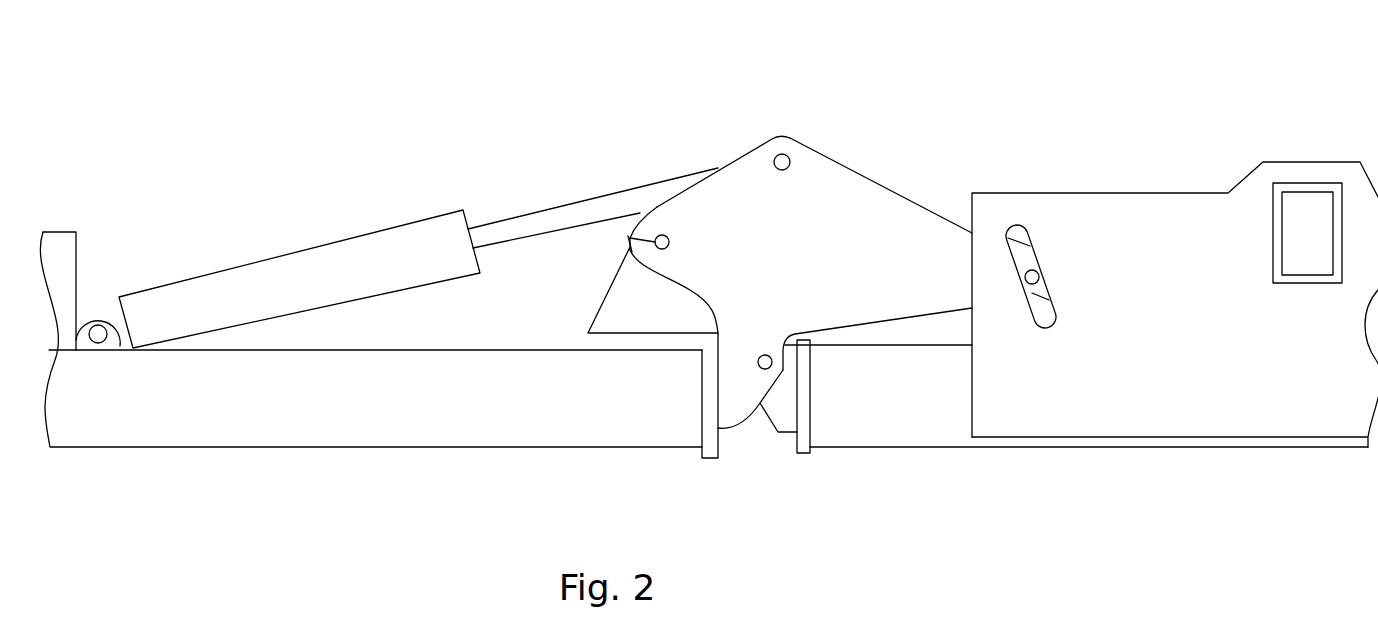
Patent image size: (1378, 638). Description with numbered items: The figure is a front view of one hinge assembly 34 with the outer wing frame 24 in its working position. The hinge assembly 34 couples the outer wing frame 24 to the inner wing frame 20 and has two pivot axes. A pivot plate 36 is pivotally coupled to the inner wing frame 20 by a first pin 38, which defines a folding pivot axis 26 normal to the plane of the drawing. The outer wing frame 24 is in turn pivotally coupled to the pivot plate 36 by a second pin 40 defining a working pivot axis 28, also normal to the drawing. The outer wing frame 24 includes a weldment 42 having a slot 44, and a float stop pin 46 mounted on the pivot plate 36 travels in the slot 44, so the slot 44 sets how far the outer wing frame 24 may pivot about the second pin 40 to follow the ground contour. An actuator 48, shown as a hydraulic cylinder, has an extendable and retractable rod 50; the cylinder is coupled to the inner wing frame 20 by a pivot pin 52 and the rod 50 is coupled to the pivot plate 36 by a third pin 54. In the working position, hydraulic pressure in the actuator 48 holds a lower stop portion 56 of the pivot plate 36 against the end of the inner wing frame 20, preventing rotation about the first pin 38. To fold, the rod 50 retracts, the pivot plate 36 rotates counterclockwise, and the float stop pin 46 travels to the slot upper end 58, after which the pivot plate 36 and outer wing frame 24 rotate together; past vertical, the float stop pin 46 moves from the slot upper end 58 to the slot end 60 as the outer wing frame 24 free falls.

The inner wing frame 20 is at (353, 447).
The outer wing frame 24 is at (894, 447).
The folding pivot axis 26 is at (668, 238).
The working pivot axis 28 is at (767, 355).
The hinge assembly 34 is at (857, 117).
The pivot plate 36 is at (880, 183).
The first pin 38 is at (630, 238).
The second pin 40 is at (758, 362).
The weldment 42 is at (1152, 208).
The slot 44 is at (1038, 310).
The float stop pin 46 is at (1040, 276).
The actuator 48 is at (382, 237).
The rod 50 is at (527, 220).
The pivot pin 52 is at (97, 330).
The third pin 54 is at (786, 154).
The lower stop portion 56 is at (730, 412).
The slot upper end 58 is at (1017, 225).
The slot end 60 is at (1050, 328).